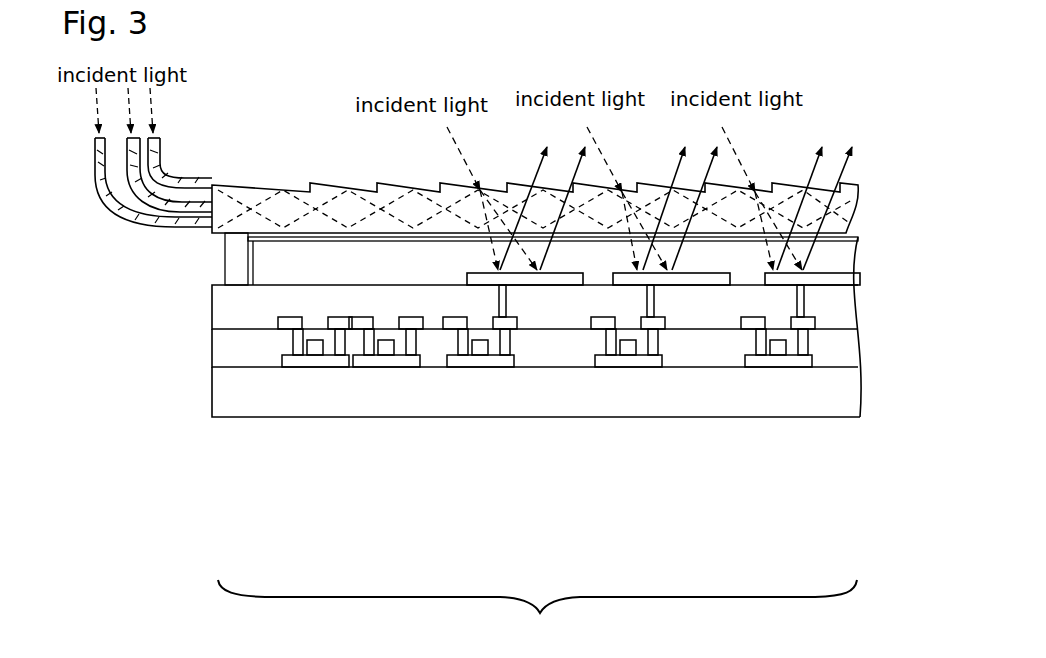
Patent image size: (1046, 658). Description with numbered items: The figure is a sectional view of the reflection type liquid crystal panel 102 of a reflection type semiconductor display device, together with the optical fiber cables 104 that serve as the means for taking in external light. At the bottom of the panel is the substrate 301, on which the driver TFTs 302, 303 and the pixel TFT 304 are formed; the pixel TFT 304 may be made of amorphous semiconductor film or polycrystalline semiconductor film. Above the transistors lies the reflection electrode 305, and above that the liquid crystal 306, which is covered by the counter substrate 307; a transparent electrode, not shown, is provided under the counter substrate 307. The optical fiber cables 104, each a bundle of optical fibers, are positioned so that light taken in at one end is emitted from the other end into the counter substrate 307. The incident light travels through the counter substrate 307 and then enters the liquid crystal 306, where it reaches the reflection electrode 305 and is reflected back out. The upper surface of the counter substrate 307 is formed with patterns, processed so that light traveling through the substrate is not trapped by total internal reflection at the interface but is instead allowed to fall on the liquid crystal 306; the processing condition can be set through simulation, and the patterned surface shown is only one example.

The reflection type liquid crystal panel 102 is at (537, 613).
The optical fiber cables 104 is at (168, 176).
The substrate 301 is at (262, 395).
The driver TFT 302 is at (315, 363).
The driver TFT 303 is at (383, 367).
The pixel TFT 304 is at (482, 363).
The reflection electrode 305 is at (568, 280).
The liquid crystal 306 is at (272, 273).
The counter substrate 307 is at (268, 200).